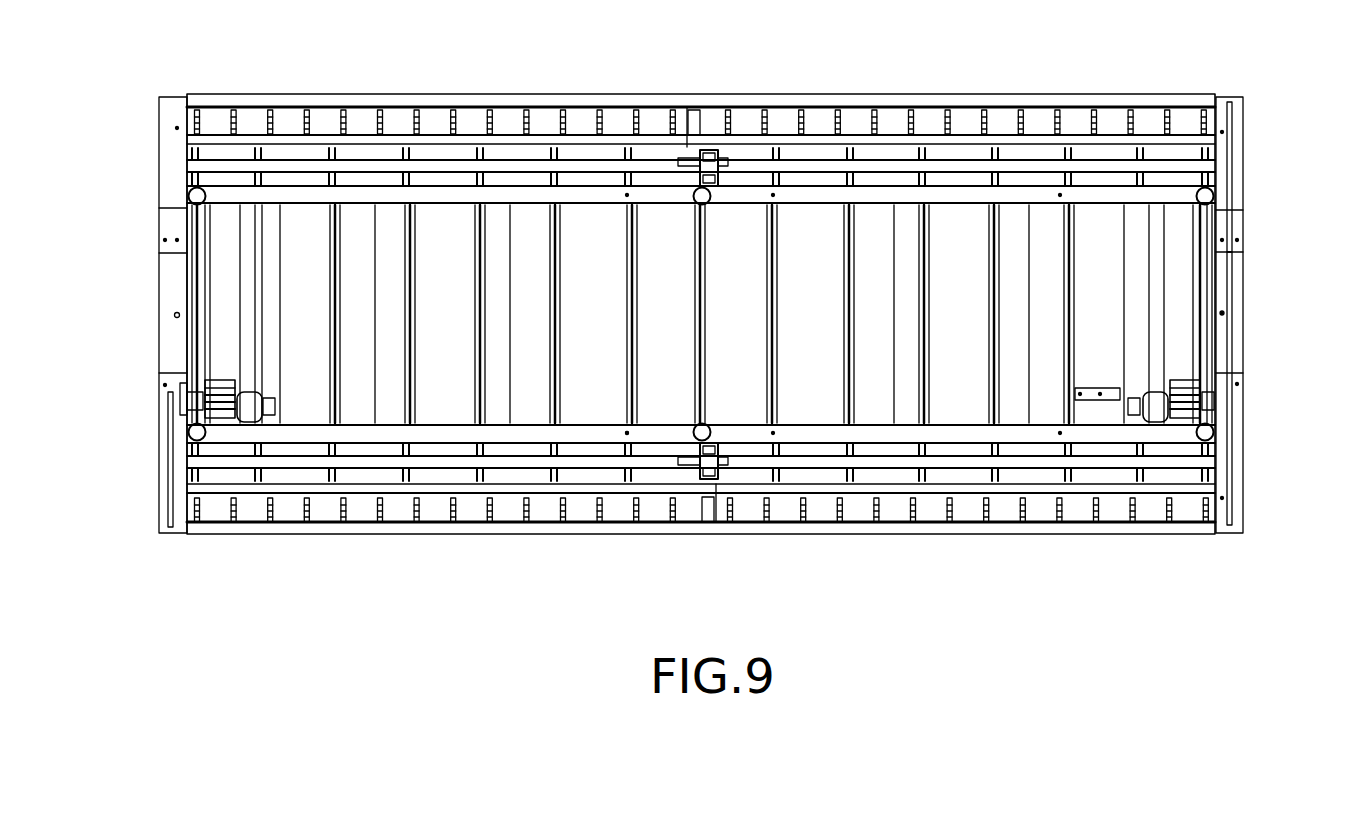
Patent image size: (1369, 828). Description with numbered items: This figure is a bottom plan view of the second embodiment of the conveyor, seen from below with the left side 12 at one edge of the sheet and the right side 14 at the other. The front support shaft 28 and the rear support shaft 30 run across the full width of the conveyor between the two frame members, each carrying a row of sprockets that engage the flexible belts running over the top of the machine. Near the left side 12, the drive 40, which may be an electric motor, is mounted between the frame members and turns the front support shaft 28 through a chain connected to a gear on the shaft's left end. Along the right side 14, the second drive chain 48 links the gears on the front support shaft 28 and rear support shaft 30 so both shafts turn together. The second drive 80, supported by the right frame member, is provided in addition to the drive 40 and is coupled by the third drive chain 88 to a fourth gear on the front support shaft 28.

The left side 12 is at (124, 312).
The right side 14 is at (1280, 273).
The front support shaft 28 is at (822, 512).
The rear support shaft 30 is at (1112, 116).
The drive 40 is at (242, 405).
The second drive chain 48 is at (1233, 188).
The second drive 80 is at (1152, 408).
The third drive chain 88 is at (1236, 503).